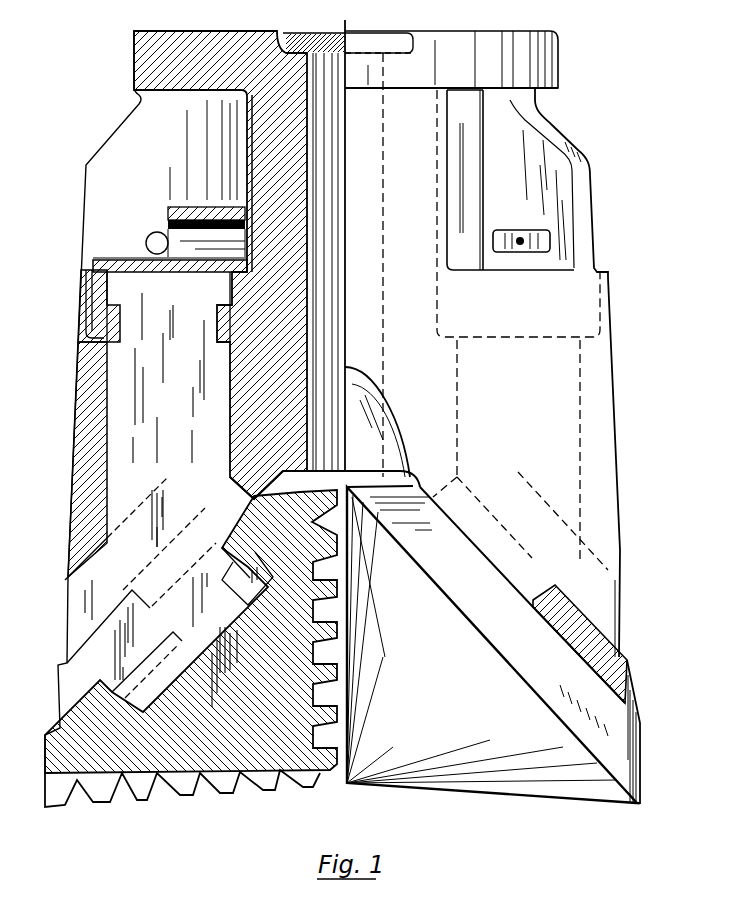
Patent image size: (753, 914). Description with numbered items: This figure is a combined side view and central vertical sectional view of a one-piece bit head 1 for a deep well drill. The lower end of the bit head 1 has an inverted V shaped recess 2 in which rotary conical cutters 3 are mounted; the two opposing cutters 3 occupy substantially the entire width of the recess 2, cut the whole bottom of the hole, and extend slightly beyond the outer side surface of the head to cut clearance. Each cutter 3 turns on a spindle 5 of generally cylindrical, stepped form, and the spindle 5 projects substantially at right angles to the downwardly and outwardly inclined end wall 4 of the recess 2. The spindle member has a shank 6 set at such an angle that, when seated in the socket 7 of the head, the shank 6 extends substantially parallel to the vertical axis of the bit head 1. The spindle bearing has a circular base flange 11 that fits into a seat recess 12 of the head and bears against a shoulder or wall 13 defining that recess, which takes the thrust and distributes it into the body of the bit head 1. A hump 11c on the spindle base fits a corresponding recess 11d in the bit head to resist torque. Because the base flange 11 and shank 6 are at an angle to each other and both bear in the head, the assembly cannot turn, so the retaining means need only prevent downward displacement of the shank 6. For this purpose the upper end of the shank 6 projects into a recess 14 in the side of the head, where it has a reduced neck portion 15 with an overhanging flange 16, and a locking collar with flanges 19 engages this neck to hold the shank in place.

The bit head 1 is at (618, 378).
The inverted V shaped recess 2 is at (368, 485).
The rotary conical cutters 3 is at (45, 764).
The inclined end walls 4 is at (568, 602).
The spindle 5 is at (199, 598).
The shank 6 is at (148, 389).
The socket 7 is at (104, 448).
The base flange 11 is at (66, 705).
The hump 11c is at (72, 608).
The recess for hump 11d is at (77, 569).
The seat recess 12 is at (176, 563).
The shoulder or wall 13 is at (246, 501).
The recess in side of head 14 is at (148, 135).
The reduced neck portion 15 is at (98, 320).
The overhanging flange 16 is at (107, 284).
The locking collar flanges 19 is at (118, 312).